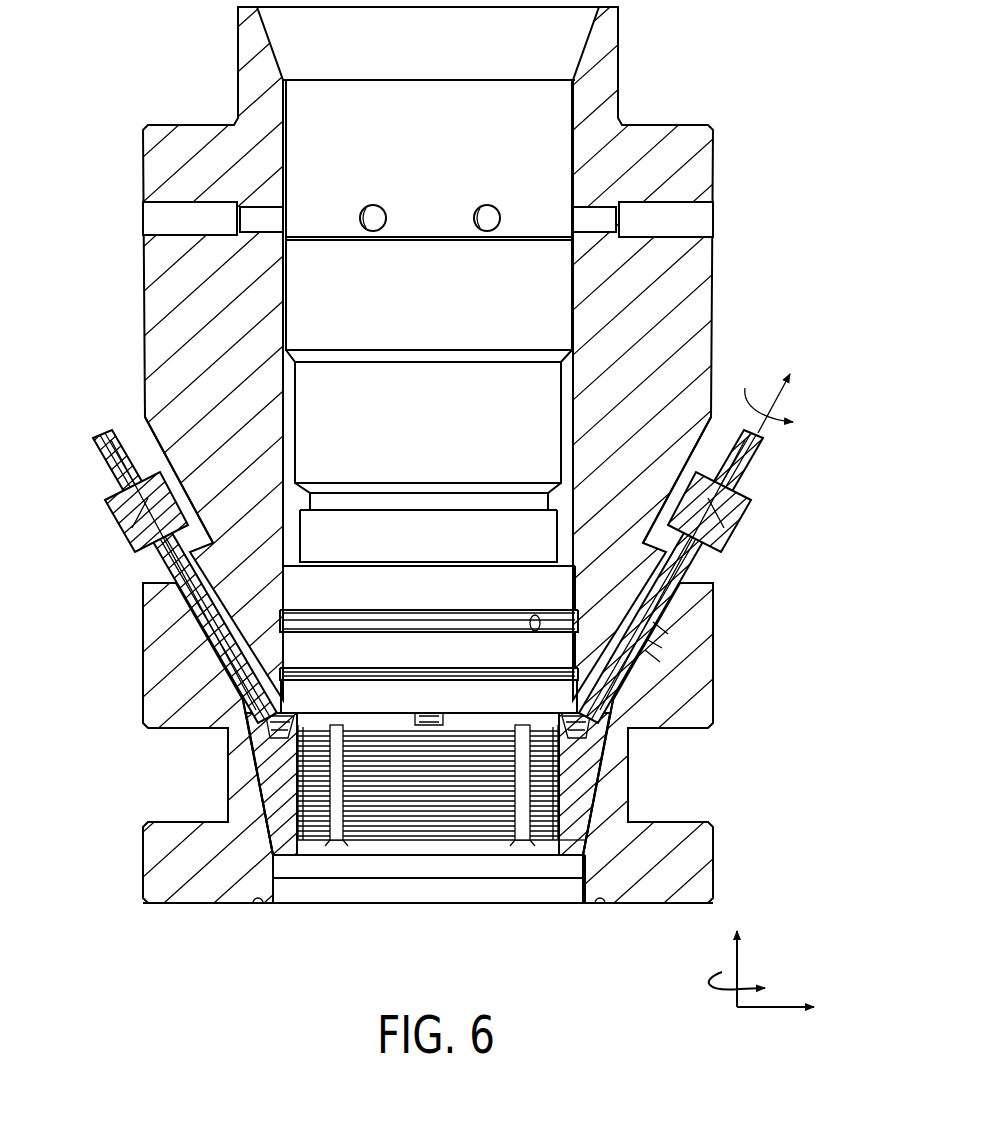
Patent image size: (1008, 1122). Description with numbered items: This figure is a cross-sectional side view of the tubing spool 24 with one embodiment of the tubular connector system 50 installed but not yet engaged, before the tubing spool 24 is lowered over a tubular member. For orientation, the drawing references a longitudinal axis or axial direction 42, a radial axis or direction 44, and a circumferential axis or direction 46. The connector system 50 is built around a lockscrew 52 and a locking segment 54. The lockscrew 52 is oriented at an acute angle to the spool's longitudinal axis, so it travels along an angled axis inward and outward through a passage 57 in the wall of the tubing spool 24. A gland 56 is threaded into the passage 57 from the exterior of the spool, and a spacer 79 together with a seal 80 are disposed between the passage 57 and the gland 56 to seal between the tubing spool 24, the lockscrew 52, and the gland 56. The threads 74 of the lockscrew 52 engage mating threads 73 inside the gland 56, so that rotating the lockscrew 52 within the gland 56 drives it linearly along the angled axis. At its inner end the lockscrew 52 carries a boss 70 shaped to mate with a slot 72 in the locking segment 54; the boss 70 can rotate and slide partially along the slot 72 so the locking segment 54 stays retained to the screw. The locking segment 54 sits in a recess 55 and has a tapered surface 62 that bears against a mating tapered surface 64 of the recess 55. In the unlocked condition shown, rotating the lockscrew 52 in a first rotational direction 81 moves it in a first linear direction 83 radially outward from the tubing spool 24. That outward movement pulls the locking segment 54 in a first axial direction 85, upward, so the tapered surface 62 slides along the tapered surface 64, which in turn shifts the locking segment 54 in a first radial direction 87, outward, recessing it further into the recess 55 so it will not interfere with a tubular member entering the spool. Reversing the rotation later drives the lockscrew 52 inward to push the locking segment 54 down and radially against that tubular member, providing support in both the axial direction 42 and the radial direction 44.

The tubing spool 24 is at (703, 260).
The longitudinal axis or axial direction 42 is at (738, 960).
The radial axis or direction 44 is at (752, 1008).
The circumferential axis or direction 46 is at (720, 986).
The connector system 50 is at (806, 374).
The lockscrew 52 is at (762, 435).
The locking segment 54 is at (594, 808).
The recess 55 is at (601, 835).
The gland 56 is at (720, 548).
The passage 57 is at (626, 586).
The tapered surface 62 is at (583, 838).
The mating tapered surface 64 is at (575, 823).
The boss 70 is at (569, 741).
The slot 72 is at (582, 777).
The mating threads 73 is at (704, 552).
The threads 74 is at (702, 576).
The spacer 79 is at (664, 630).
The seal 80 is at (652, 654).
The first rotational direction 81 is at (760, 392).
The first linear direction 83 is at (772, 392).
The first axial direction 85 is at (548, 800).
The first radial direction 87 is at (518, 777).